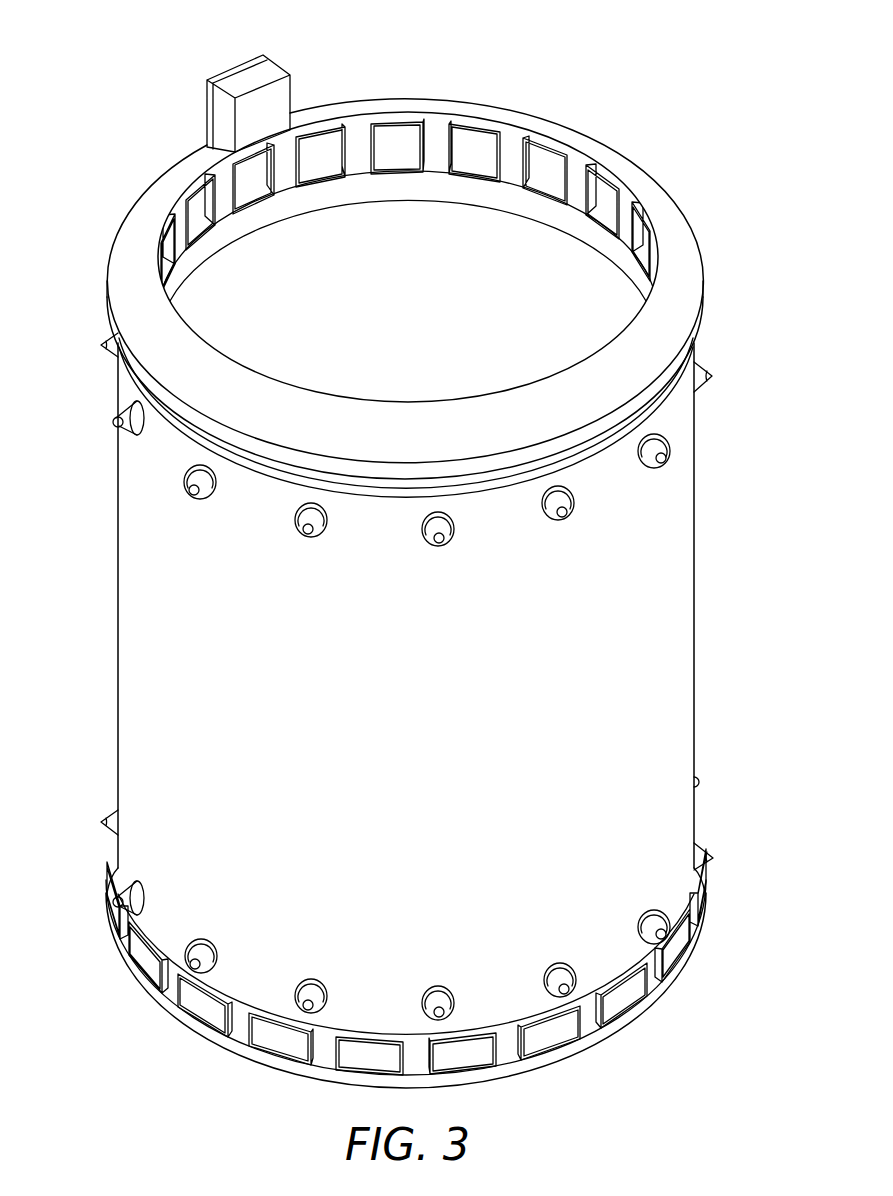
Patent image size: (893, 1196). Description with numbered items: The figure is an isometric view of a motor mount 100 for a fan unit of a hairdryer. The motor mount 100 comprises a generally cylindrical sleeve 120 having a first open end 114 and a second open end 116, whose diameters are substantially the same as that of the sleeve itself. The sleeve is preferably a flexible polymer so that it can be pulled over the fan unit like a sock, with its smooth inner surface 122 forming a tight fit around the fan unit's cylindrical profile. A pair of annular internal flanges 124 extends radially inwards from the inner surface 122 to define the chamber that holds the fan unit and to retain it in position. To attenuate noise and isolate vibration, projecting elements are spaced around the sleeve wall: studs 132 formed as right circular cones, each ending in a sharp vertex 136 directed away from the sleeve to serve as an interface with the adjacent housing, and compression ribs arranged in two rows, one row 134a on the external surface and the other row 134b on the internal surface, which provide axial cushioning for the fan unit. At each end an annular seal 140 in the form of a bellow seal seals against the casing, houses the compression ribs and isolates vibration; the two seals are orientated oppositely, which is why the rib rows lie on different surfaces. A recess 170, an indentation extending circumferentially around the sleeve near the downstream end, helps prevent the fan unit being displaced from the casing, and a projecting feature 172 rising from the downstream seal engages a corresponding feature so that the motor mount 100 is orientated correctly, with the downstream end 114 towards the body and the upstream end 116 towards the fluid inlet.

The motor mount 100 is at (128, 103).
The first open end 114 is at (699, 240).
The second open end 116 is at (94, 933).
The cylindrical sleeve 120 is at (694, 627).
The inner surface 122 is at (428, 311).
The annular internal flanges 124 is at (405, 212).
The studs 132 is at (319, 533).
The compression ribs 134a is at (627, 1003).
The compression ribs 134b is at (480, 126).
The vertex 136 is at (566, 521).
The annular seal 140 is at (134, 222).
The recess 170 is at (664, 395).
The projecting feature 172 is at (240, 75).